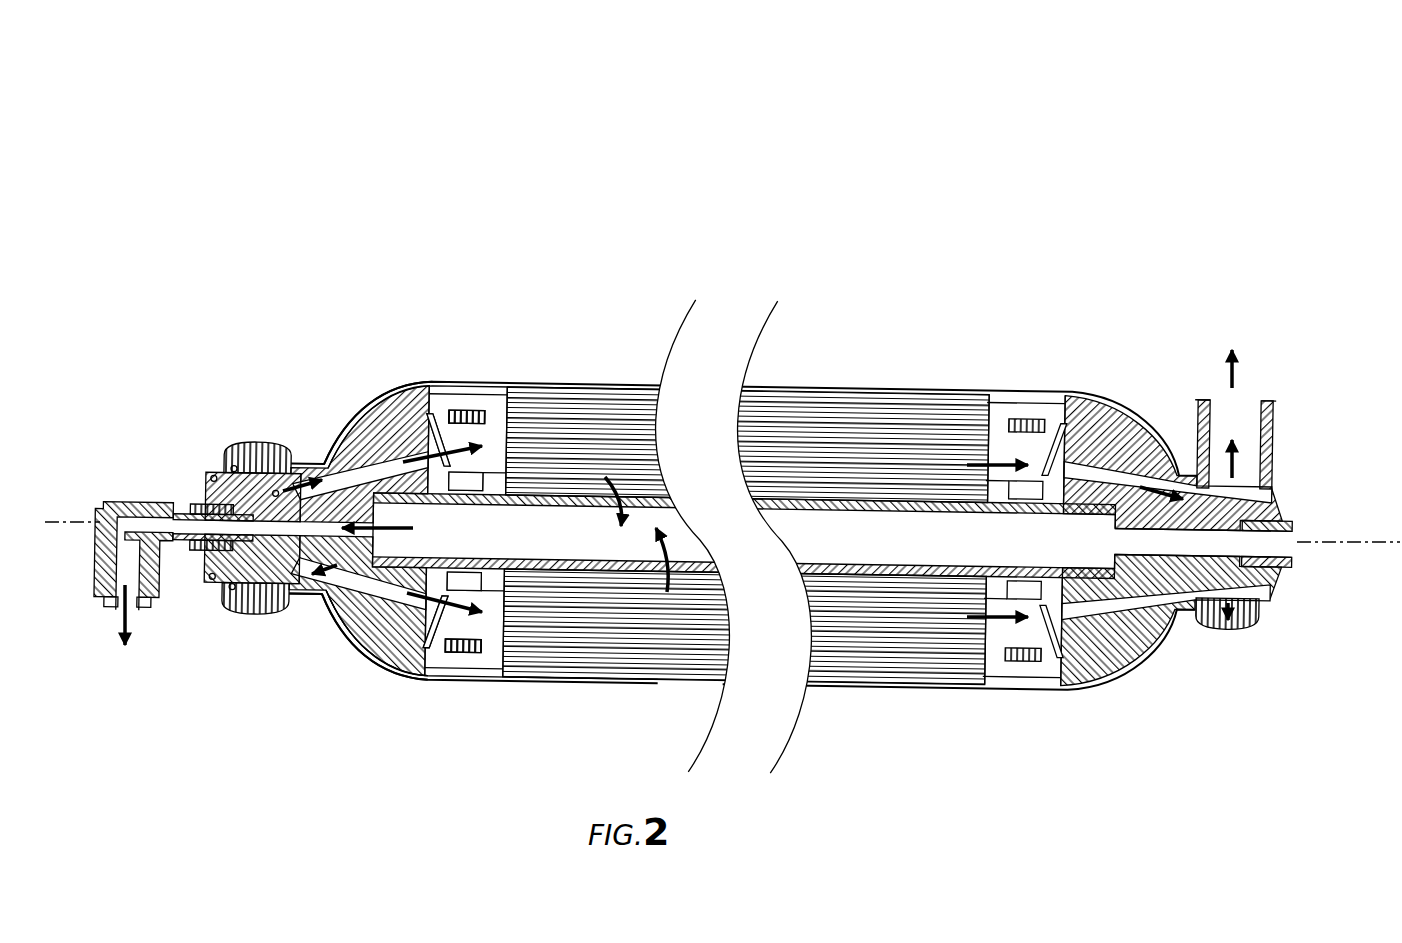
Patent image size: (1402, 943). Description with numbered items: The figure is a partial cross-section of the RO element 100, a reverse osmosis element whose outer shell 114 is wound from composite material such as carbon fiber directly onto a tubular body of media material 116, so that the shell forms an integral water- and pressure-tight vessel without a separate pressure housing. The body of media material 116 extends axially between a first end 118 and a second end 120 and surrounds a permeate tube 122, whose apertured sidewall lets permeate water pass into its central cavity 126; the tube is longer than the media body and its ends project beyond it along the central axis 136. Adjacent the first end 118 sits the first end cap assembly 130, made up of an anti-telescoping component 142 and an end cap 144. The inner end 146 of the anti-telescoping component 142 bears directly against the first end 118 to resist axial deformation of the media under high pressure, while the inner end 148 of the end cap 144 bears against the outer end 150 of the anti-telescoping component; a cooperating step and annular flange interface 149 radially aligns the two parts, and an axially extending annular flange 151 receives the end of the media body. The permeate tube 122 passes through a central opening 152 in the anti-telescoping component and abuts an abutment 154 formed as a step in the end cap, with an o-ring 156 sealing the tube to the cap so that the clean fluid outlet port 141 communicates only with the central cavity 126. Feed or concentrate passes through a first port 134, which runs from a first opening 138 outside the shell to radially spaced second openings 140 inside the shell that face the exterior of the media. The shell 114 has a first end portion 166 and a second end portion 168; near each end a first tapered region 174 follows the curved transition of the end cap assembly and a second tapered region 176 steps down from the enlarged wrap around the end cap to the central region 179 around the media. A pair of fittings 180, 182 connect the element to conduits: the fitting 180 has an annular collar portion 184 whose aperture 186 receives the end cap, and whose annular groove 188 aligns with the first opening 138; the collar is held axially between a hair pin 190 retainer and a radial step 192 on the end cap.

The RO element 100 is at (398, 300).
The shell 114 is at (380, 376).
The body of media material 116 is at (527, 395).
The first end 118 is at (480, 404).
The second end 120 is at (1010, 436).
The permeate tube 122 is at (385, 503).
The central cavity 126 is at (548, 545).
The first end cap assembly 130 is at (383, 686).
The first port 134 is at (330, 580).
The central axis 136 is at (83, 522).
The first opening 138 is at (233, 447).
The second opening 140 is at (430, 410).
The clean fluid outlet port 141 is at (285, 514).
The anti-telescoping component 142 is at (464, 386).
The end cap 144 is at (370, 640).
The inner end 146 is at (488, 474).
The inner end 148 is at (443, 675).
The cooperating step and annular flange interface 149 is at (453, 664).
The outer end 150 is at (397, 672).
The axially extending annular flange 151 is at (518, 675).
The central opening 152 is at (468, 507).
The abutment 154 is at (310, 600).
The o-ring 156 is at (345, 616).
The first end portion 166 is at (370, 383).
The second end portion 168 is at (1122, 392).
The first tapered region 174 is at (332, 407).
The second tapered region 176 is at (598, 376).
The central region 179 is at (838, 382).
The fitting 180 is at (235, 611).
The fitting 182 is at (1215, 626).
The annular collar portion 184 is at (227, 458).
The aperture 186 is at (207, 489).
The annular groove 188 is at (258, 592).
The hair pin 190 is at (222, 592).
The radial step 192 is at (272, 577).